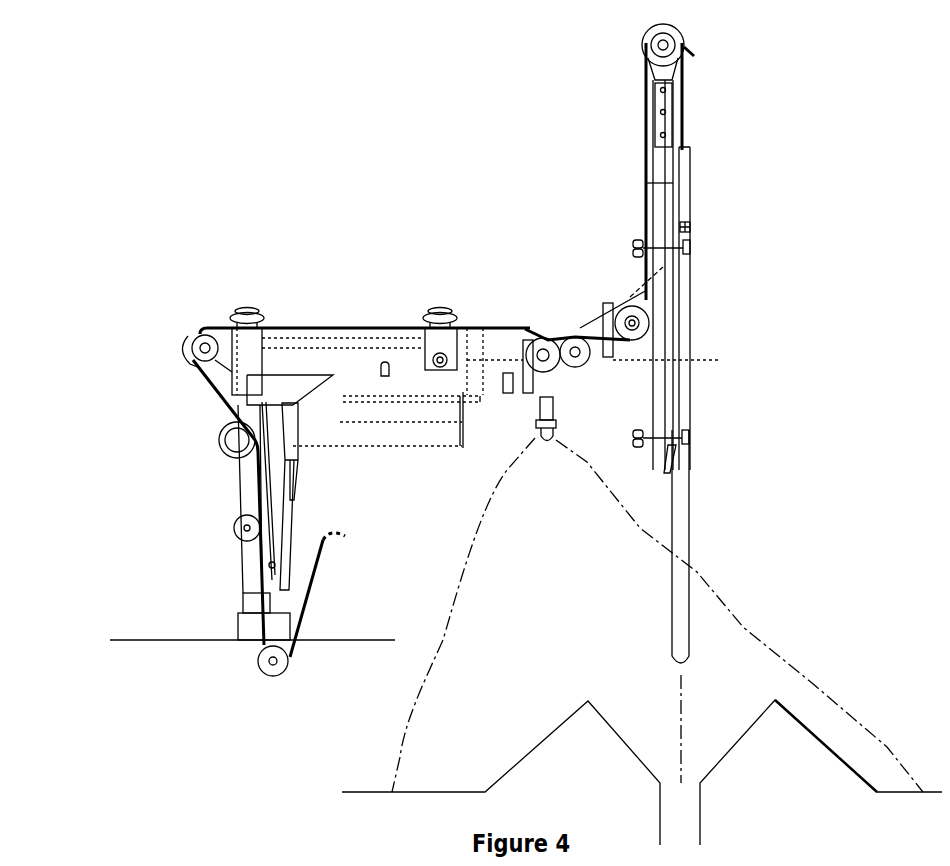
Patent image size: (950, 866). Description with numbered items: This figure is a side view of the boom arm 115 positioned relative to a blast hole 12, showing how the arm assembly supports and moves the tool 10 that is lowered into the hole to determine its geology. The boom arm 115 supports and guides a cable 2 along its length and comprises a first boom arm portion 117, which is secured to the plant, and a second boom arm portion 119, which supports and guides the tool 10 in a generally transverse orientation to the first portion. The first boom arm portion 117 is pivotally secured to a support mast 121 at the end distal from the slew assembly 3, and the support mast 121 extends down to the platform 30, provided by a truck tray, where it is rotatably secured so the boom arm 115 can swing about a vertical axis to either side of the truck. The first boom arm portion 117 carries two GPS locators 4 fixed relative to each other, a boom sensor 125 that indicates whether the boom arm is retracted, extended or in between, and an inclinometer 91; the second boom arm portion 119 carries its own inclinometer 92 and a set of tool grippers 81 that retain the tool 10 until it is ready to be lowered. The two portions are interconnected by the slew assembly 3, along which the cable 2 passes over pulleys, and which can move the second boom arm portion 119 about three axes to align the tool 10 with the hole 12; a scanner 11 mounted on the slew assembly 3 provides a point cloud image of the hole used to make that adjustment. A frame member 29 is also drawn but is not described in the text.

The boom arm 115 is at (402, 170).
The cable 2 is at (255, 307).
The GPS locators 4 is at (423, 310).
The slew assembly 3 is at (525, 332).
The first boom arm portion 117 is at (292, 340).
The support mast 121 is at (235, 478).
The platform 30 is at (150, 641).
The inclinometer 91 is at (385, 380).
The boom sensor 125 is at (443, 375).
The frame 29 is at (437, 450).
The tool grippers 81 is at (691, 247).
The second boom arm portion 119 is at (680, 286).
The inclinometer 92 is at (645, 352).
The tool 10 is at (684, 478).
The scanner 11 is at (560, 435).
The blast hole 12 is at (698, 780).